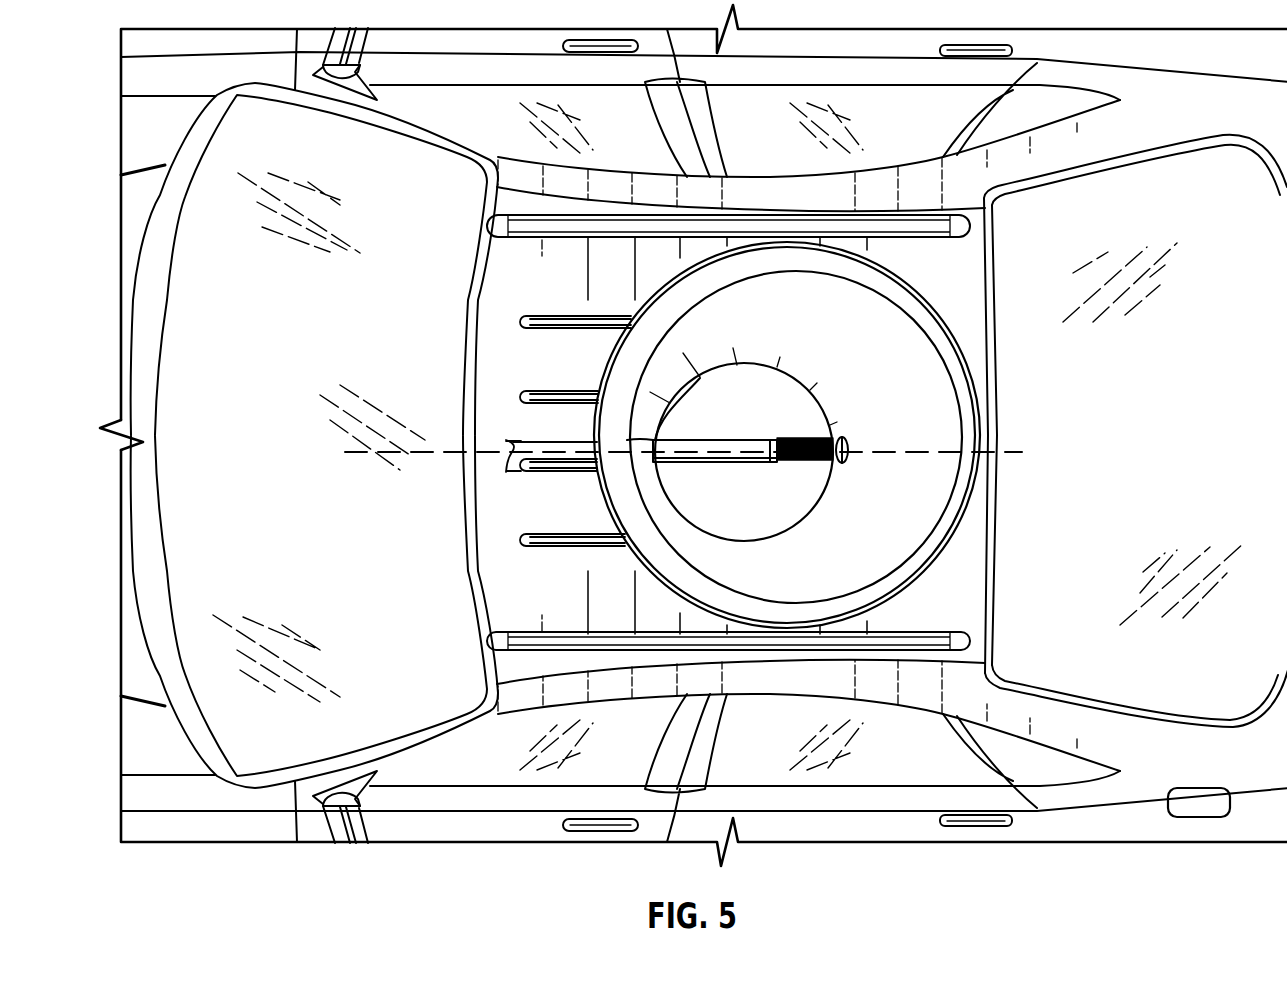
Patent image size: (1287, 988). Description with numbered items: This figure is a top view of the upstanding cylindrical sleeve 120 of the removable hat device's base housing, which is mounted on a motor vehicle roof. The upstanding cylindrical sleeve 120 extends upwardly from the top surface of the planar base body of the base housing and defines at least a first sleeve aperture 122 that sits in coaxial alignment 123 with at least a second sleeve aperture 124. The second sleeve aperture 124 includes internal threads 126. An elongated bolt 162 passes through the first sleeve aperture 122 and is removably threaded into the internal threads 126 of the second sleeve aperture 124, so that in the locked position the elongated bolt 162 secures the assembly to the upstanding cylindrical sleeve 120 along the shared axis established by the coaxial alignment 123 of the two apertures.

The upstanding cylindrical sleeve 120 is at (811, 258).
The first sleeve aperture 122 is at (700, 378).
The coaxial alignment 123 is at (422, 453).
The second sleeve aperture 124 is at (843, 446).
The internal threads 126 is at (827, 470).
The elongated bolt 162 is at (514, 440).